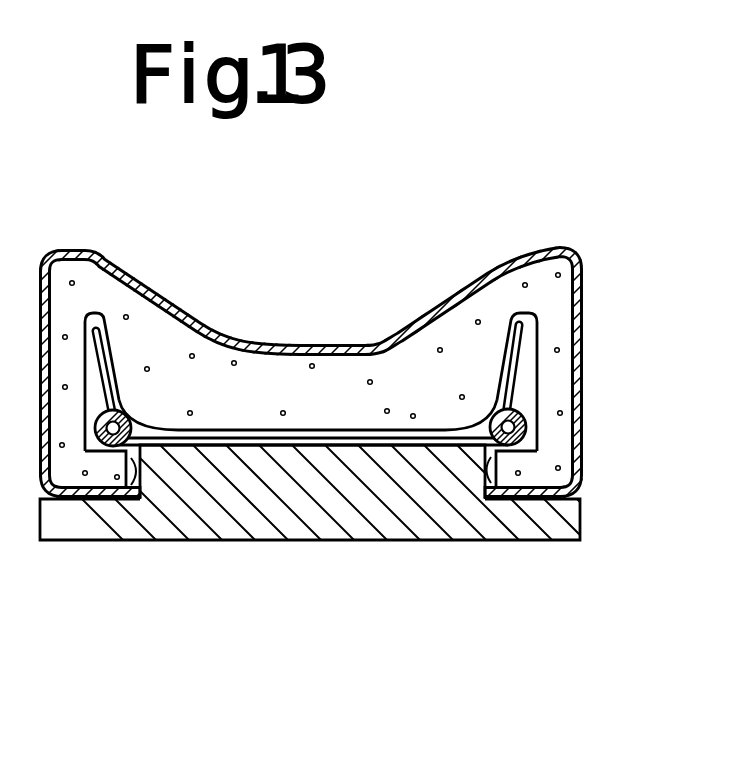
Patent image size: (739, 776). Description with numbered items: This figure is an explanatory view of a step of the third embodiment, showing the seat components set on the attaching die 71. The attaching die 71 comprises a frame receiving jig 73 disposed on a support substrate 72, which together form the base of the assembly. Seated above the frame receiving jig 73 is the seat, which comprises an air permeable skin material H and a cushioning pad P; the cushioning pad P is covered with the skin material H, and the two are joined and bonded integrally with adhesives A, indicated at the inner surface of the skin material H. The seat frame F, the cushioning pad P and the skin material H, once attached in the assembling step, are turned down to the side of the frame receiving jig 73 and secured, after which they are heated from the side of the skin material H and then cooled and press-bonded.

The adhesives A is at (304, 344).
The cushioning pad P is at (553, 303).
The skin material H is at (583, 385).
The seat frame F is at (525, 430).
The attaching die 71 is at (376, 586).
The support substrate 72 is at (197, 662).
The frame receiving jig 73 is at (140, 497).